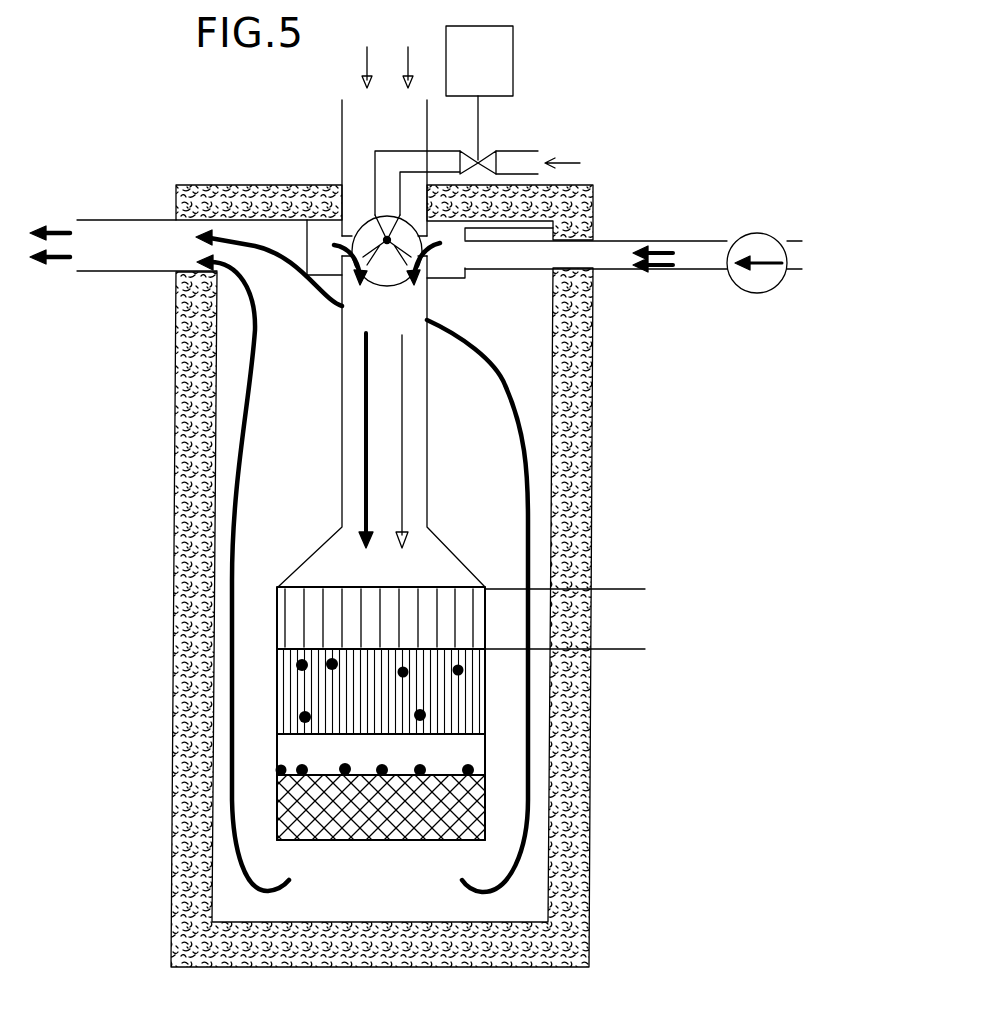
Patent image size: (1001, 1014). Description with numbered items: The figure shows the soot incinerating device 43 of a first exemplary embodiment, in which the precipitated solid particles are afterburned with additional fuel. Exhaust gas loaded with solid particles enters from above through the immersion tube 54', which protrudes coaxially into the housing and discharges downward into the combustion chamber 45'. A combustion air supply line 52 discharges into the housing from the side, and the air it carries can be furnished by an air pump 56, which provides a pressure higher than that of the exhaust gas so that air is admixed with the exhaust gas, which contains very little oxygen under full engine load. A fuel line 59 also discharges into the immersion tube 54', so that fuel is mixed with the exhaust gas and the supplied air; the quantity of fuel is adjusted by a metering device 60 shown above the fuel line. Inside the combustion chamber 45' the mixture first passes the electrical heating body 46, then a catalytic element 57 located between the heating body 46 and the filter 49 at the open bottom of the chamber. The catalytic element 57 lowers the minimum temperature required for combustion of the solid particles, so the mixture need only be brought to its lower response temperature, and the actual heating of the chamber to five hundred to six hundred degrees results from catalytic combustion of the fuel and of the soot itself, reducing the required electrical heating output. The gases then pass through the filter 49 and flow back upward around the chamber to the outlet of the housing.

The soot incinerating device 43 is at (598, 468).
The combustion chamber 45' is at (390, 317).
The electrical heating body 46 is at (443, 603).
The filter 49 is at (465, 809).
The combustion air supply line 52 is at (587, 252).
The immersion tube 54' is at (414, 265).
The air pump 56 is at (750, 246).
The catalytic element 57 is at (475, 694).
The fuel line 59 is at (425, 163).
The metering device 60 is at (498, 80).